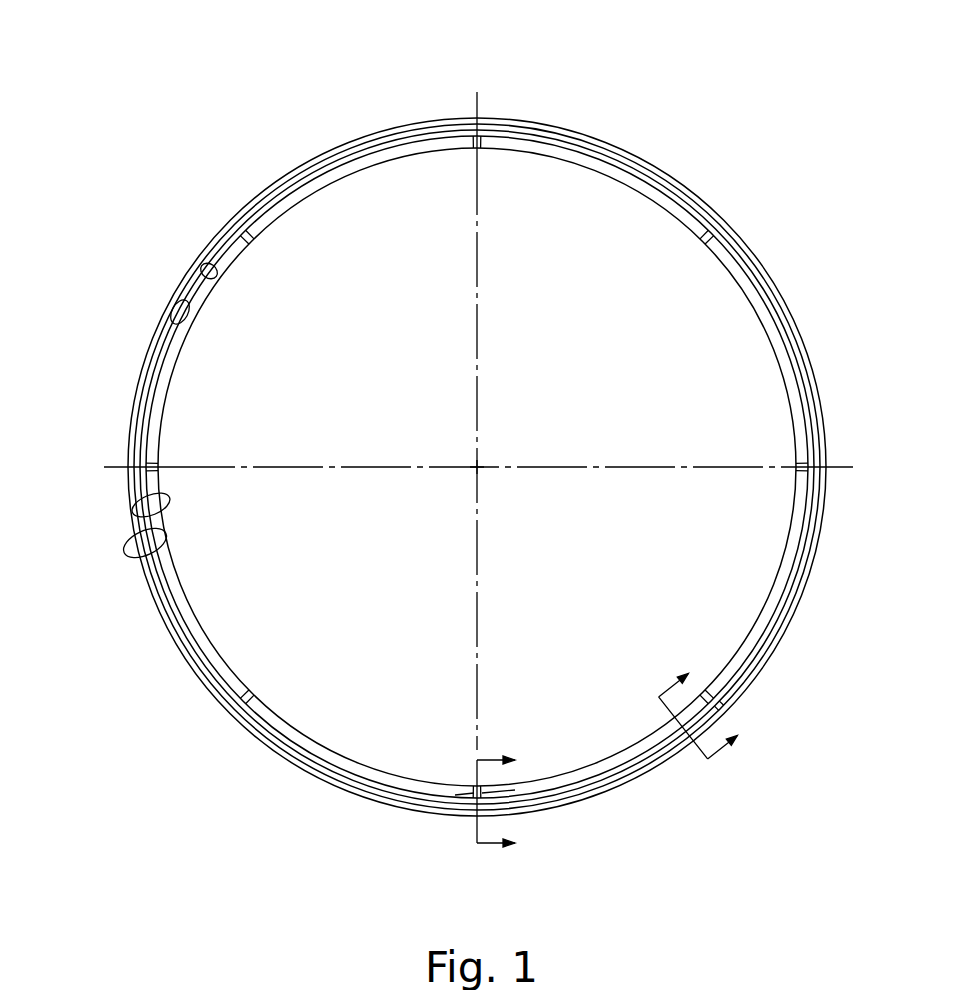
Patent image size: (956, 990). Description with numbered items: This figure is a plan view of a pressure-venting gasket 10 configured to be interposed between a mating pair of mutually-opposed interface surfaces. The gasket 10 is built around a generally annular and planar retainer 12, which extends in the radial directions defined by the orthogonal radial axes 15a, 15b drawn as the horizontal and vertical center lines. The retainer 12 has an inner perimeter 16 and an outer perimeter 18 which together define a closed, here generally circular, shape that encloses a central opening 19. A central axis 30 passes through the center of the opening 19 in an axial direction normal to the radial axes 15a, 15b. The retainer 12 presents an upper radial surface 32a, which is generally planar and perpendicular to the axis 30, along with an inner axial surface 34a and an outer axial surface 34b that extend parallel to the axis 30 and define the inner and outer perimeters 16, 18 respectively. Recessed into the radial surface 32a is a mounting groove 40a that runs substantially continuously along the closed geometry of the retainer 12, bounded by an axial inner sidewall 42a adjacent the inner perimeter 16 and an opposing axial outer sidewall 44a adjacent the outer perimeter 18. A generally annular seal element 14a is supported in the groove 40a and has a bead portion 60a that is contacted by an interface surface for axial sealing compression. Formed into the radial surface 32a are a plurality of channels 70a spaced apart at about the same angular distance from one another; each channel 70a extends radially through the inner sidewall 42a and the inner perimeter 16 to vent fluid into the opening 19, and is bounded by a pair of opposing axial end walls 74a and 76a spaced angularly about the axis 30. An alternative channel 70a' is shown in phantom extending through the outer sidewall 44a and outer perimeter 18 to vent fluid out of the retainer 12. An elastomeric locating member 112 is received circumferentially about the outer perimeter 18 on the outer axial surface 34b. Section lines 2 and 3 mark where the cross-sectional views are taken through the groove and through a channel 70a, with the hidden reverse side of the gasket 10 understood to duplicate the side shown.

The pressure-venting gasket 10 is at (761, 111).
The retainer 12 is at (202, 630).
The seal element 14a is at (172, 597).
The radial axis 15a is at (477, 103).
The radial axis 15b is at (113, 466).
The inner perimeter 16 is at (228, 665).
The outer perimeter 18 is at (285, 760).
The opening 19 is at (444, 503).
The central axis 30 is at (478, 467).
The upper radial surface 32a is at (155, 423).
The inner axial surface 34a is at (135, 502).
The outer axial surface 34b is at (155, 552).
The mounting groove 40a is at (234, 253).
The axial inner sidewall 42a is at (212, 279).
The axial outer sidewall 44a is at (180, 302).
The bead portion 60a is at (157, 372).
The channel 70a is at (477, 467).
The channel 70a' is at (778, 712).
The axial end wall 74a is at (515, 790).
The axial end wall 76a is at (455, 795).
The locating member 112 is at (332, 788).
The section line 2- 2 is at (705, 709).
The section line 3- 3 is at (496, 802).